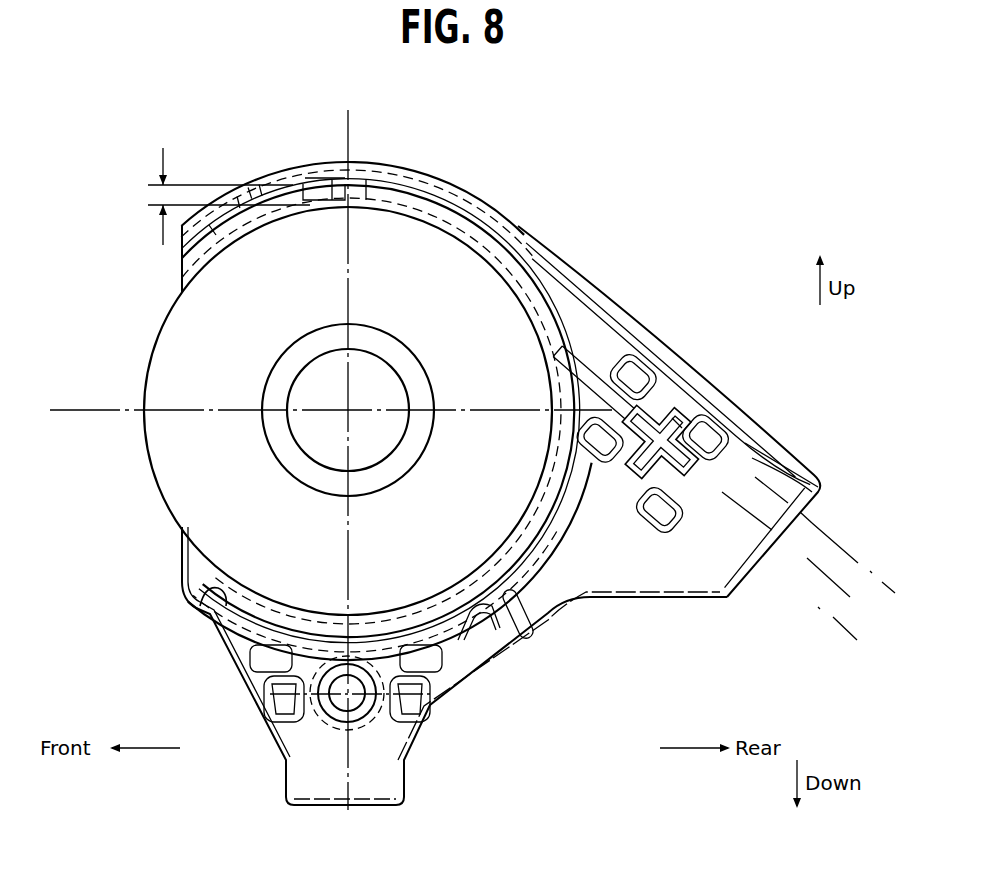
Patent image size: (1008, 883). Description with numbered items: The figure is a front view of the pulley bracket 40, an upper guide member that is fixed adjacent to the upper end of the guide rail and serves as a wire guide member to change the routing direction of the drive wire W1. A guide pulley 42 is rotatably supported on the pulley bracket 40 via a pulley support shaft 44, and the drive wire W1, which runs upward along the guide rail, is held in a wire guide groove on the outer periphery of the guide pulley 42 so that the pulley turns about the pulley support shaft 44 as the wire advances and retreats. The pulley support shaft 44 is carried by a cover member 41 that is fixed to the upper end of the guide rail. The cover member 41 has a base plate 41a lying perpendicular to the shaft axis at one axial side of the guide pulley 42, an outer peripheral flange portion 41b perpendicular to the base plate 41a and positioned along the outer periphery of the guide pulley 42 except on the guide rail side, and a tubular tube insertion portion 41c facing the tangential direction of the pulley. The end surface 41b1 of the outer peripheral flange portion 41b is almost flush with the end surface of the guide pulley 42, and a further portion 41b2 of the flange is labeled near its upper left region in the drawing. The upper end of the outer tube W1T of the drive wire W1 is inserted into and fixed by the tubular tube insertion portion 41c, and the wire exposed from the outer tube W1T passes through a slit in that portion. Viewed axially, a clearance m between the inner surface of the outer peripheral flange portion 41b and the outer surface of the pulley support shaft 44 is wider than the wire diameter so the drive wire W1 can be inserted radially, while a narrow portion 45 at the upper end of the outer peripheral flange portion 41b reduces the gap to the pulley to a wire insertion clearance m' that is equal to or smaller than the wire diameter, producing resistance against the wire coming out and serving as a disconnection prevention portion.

The pulley bracket 40 is at (595, 227).
The cover member 41 is at (473, 192).
The base plate 41a is at (205, 573).
The outer peripheral flange portion 41b is at (405, 168).
The end surface 41b1 is at (510, 227).
The cap segment of rim 41b2 is at (243, 190).
The tubular tube insertion portion 41c is at (782, 452).
The guide pulley 42 is at (190, 335).
The pulley support shaft 44 is at (305, 388).
The narrow portion 45 is at (342, 193).
The clearance m is at (447, 263).
The wire insertion clearance m' is at (229, 196).
The drive wire W1 is at (810, 566).
The outer tube W1T is at (840, 544).